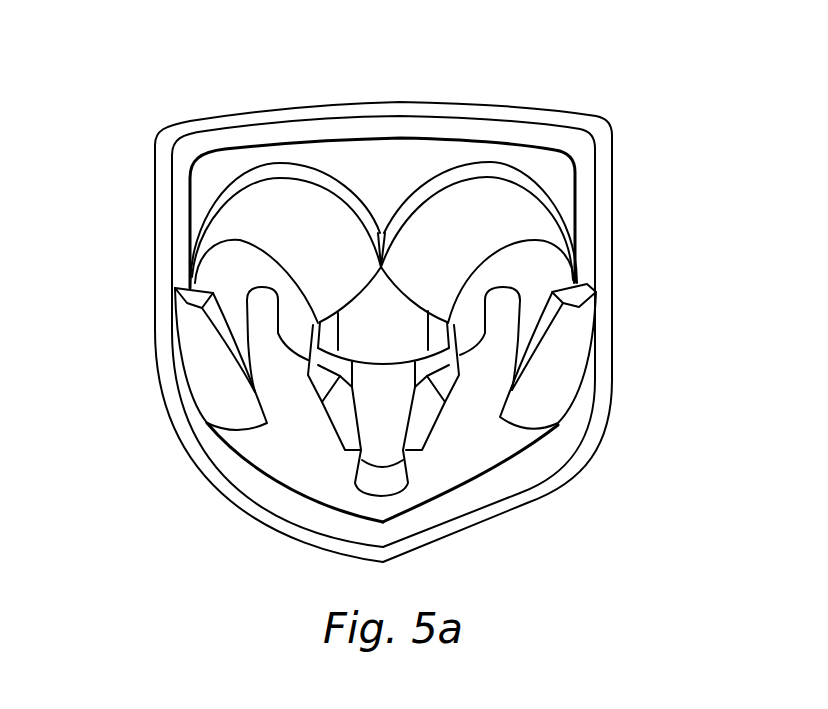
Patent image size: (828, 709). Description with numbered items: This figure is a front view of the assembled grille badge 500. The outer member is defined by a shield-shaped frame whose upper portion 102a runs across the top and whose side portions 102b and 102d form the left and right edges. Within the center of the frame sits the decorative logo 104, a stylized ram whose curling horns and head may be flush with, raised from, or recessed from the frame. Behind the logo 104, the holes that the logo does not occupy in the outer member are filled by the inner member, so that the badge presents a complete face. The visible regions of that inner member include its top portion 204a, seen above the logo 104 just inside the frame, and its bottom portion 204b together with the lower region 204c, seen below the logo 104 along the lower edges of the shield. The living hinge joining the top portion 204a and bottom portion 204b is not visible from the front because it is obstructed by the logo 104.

The assembled grille badge 500 is at (545, 75).
The upper portion of frame 102a is at (225, 120).
The side portion of frame 102b is at (155, 278).
The side portion of frame 102d is at (613, 263).
The decorative logo 104 is at (238, 207).
The top portion of inner member 204a is at (380, 170).
The bottom portion of inner member 204b is at (472, 453).
The lower left inner rim surface 204c is at (303, 522).